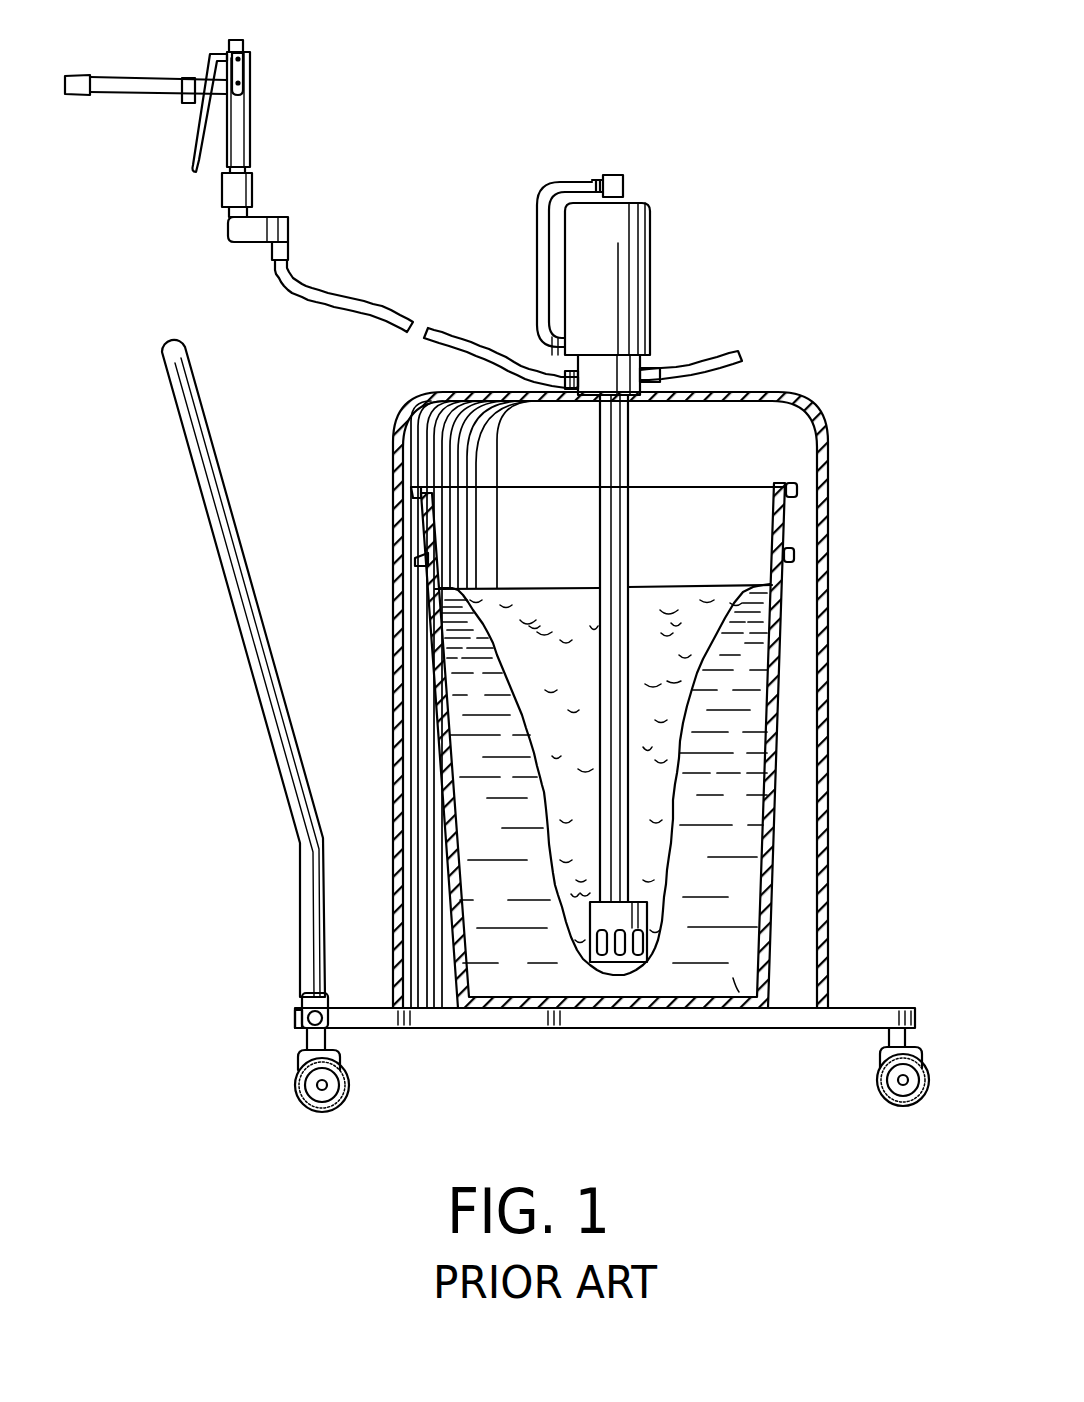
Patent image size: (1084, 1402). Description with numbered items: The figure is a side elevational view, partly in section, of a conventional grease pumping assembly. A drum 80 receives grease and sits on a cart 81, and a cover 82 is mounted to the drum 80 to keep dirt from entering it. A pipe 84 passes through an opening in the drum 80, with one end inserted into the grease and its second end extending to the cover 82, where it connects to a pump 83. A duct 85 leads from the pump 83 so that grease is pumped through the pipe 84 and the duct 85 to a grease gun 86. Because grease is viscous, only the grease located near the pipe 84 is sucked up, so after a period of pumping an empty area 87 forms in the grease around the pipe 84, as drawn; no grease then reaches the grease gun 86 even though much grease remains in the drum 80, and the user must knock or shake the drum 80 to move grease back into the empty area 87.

The drum 80 is at (763, 824).
The cart 81 is at (468, 1020).
The cover 82 is at (828, 492).
The pump 83 is at (638, 248).
The pipe 84 is at (607, 878).
The duct 85 is at (442, 327).
The grease gun 86 is at (260, 147).
The empty area 87 is at (583, 684).